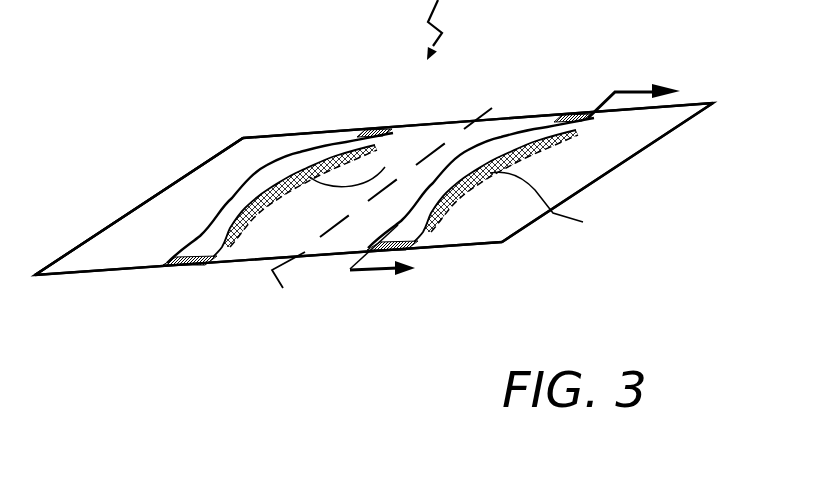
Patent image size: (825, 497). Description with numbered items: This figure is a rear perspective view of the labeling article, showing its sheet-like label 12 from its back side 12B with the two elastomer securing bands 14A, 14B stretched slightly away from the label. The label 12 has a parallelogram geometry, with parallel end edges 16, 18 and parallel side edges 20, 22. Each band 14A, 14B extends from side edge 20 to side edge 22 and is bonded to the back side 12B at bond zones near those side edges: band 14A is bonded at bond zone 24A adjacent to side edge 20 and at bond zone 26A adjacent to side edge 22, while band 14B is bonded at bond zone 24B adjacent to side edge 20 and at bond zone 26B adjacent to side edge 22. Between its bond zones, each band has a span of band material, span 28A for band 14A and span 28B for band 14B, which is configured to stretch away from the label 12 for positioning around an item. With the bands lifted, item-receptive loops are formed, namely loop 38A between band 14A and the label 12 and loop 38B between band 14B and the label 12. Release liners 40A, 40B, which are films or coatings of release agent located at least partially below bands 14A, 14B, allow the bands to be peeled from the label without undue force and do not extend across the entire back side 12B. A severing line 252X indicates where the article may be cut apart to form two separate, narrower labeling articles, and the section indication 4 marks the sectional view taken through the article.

The label 12 is at (116, 194).
The back side 12B is at (200, 187).
The band 14A is at (481, 161).
The band 14B is at (251, 163).
The end edge 16 is at (613, 172).
The end edge 18 is at (77, 247).
The side edge 20 is at (84, 272).
The side edge 22 is at (712, 103).
The bond zone 24A is at (355, 264).
The bond zone 24B is at (178, 265).
The bond zone 26A is at (583, 83).
The bond zone 26B is at (373, 130).
The span 28A is at (500, 145).
The span 28B is at (303, 162).
The loop 38A is at (496, 228).
The loop 38B is at (264, 224).
The release liner 40A is at (561, 204).
The release liner 40B is at (365, 161).
The severing line 252X is at (285, 296).
The section line 4- 4 is at (525, 181).